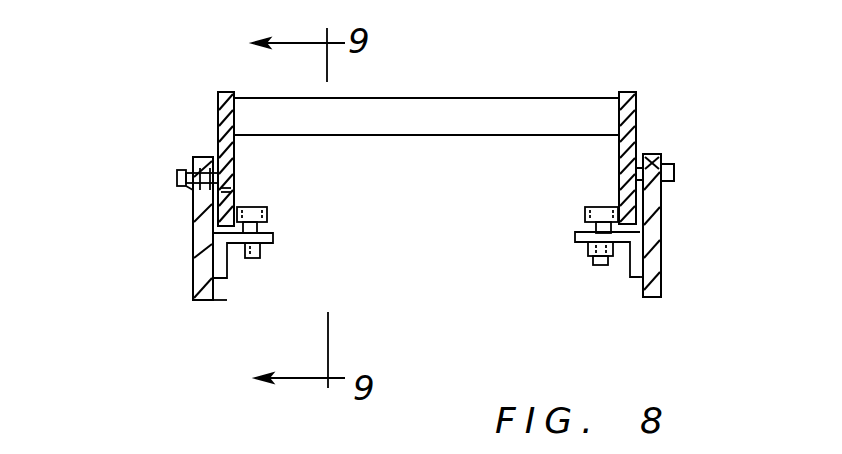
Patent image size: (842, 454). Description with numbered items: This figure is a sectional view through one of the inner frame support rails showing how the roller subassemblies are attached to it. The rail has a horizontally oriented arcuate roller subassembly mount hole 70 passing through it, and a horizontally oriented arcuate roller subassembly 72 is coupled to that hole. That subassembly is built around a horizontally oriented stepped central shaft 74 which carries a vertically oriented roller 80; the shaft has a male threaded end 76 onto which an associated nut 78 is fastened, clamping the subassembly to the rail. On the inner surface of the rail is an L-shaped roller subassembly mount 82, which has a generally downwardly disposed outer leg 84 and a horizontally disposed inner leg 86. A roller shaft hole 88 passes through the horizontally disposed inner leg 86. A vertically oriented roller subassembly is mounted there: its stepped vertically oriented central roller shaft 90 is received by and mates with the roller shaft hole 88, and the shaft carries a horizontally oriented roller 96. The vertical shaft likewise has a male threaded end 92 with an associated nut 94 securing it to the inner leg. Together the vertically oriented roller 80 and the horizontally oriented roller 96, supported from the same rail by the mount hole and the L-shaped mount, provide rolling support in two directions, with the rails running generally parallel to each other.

The horizontally oriented arcuate roller subassembly mount hole 70 is at (658, 153).
The horizontally oriented arcuate roller subassembly 72 is at (238, 184).
The horizontally oriented stepped central shaft 74 is at (198, 156).
The male threaded end 76 is at (175, 178).
The nut 78 is at (178, 192).
The vertically oriented roller 80 is at (236, 164).
The L-shaped roller subassembly mount 82 is at (232, 258).
The generally downwardly disposed outer leg 84 is at (207, 300).
The horizontally disposed inner leg 86 is at (275, 240).
The roller shaft hole 88 is at (586, 252).
The stepped vertically oriented central roller shaft 90 is at (584, 234).
The male threaded end 92 is at (612, 268).
The nut 94 is at (597, 265).
The horizontally oriented roller 96 is at (590, 205).